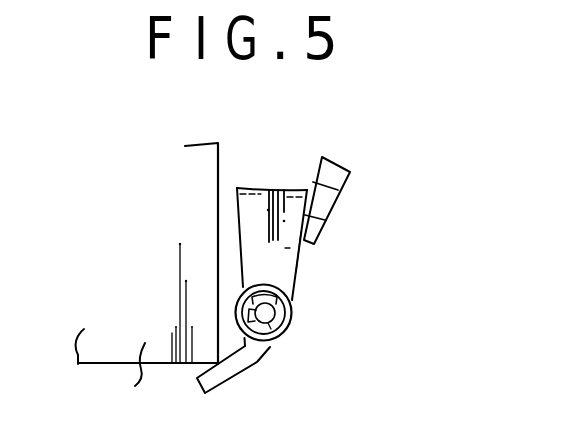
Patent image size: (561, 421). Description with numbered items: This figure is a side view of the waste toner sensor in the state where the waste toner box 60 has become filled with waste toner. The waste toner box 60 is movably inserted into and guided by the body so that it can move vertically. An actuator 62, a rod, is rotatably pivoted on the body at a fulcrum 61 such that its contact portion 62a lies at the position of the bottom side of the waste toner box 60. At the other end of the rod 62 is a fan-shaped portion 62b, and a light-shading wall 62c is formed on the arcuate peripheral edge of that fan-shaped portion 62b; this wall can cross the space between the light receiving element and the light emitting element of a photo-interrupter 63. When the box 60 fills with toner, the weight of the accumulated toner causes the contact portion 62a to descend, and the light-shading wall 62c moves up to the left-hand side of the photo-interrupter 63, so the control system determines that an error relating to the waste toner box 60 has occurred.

The waste toner box 60 is at (141, 380).
The fulcrum 61 is at (277, 318).
The actuator 62 is at (298, 277).
The contact portion 62a is at (229, 368).
The fan-shaped portion 62b is at (297, 250).
The light-shading wall 62c is at (270, 187).
The photo-interrupter 63 is at (336, 167).